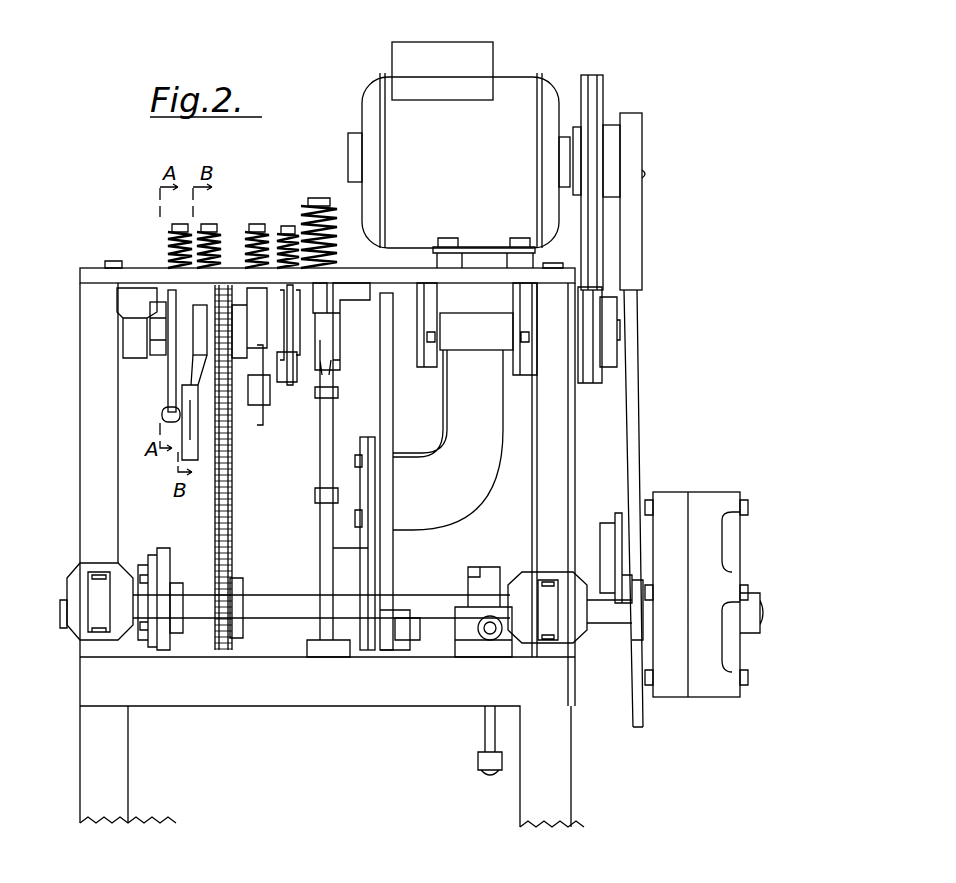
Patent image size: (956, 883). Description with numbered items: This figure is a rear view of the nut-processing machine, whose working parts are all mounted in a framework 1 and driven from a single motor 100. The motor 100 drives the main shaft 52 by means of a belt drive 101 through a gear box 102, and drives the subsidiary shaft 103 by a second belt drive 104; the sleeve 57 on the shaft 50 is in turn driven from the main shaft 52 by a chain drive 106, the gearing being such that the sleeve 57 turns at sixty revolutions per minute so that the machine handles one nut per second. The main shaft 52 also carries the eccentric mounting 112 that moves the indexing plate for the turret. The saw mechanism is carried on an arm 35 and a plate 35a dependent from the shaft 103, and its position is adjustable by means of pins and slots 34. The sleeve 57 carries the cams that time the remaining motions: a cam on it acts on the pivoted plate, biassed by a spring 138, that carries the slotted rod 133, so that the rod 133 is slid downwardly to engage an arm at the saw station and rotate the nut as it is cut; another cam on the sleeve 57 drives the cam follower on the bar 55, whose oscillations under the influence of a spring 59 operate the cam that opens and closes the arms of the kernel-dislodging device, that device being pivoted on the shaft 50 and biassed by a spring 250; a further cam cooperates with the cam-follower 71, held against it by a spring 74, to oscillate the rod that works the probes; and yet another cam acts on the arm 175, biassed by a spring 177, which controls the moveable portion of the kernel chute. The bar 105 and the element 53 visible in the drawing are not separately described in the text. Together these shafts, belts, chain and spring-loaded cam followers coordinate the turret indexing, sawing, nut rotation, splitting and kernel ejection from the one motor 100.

The framework 1 is at (362, 690).
The motor 100 is at (459, 155).
The belt drive 101 is at (630, 307).
The gear box 102 is at (710, 520).
The subsidiary shaft 103 is at (477, 329).
The belt drive 104 is at (590, 272).
The bar 105 is at (388, 410).
The chain drive 106 is at (218, 520).
The eccentric mounting 112 is at (145, 562).
The slotted rod 133 is at (186, 442).
The spring 138 is at (228, 218).
The spring 177 is at (178, 240).
The arm 175 is at (170, 392).
The spring 250 is at (316, 200).
The pins and slots 34 is at (362, 520).
The arm 35 is at (448, 440).
The plate 35a is at (368, 548).
The shaft 50 is at (118, 320).
The main shaft 52 is at (272, 612).
The rod 53 is at (326, 476).
The bar 55 is at (262, 410).
The sleeve 57 is at (182, 340).
The spring 59 is at (257, 228).
The cam-follower 71 is at (291, 388).
The spring 74 is at (287, 230).